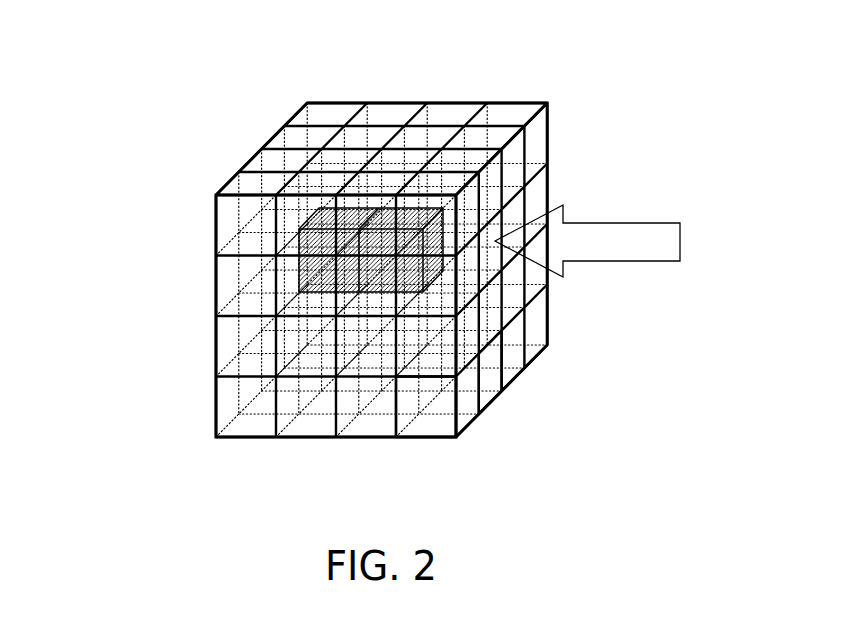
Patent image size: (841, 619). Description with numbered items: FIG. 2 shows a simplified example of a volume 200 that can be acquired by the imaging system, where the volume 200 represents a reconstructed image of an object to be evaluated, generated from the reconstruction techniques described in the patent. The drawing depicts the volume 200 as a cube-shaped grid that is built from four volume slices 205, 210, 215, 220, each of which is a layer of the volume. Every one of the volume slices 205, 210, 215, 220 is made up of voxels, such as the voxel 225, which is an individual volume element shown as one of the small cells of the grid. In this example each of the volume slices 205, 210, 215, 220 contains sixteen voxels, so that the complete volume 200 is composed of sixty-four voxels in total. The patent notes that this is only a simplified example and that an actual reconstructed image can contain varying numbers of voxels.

The volume 200 is at (134, 46).
The volume slice 205 is at (442, 311).
The volume slice 210 is at (614, 241).
The volume slice 215 is at (537, 292).
The volume slice 220 is at (498, 398).
The voxel 225 is at (432, 422).